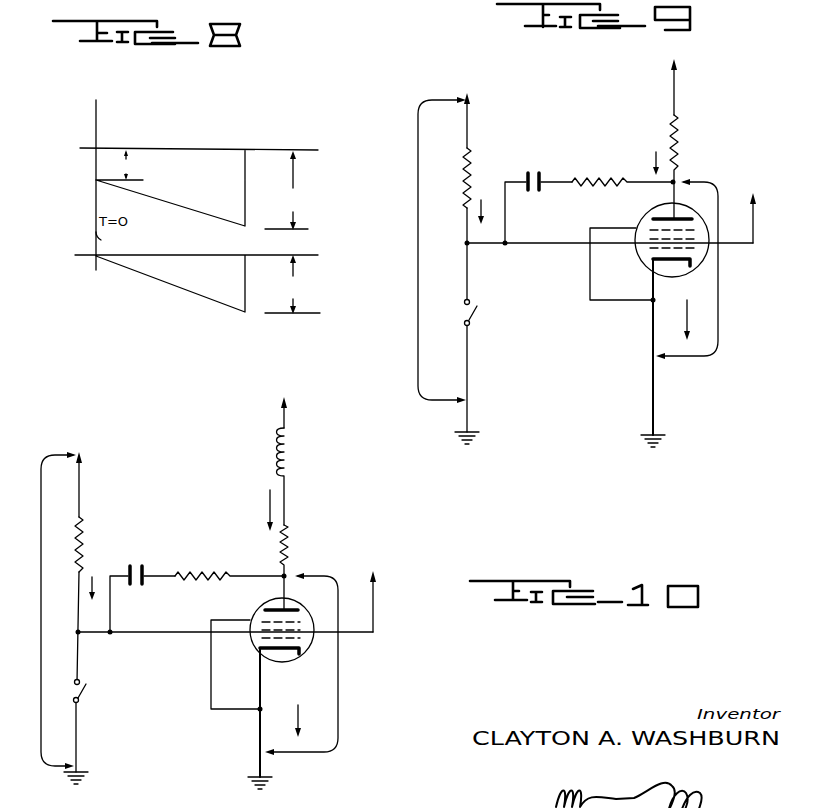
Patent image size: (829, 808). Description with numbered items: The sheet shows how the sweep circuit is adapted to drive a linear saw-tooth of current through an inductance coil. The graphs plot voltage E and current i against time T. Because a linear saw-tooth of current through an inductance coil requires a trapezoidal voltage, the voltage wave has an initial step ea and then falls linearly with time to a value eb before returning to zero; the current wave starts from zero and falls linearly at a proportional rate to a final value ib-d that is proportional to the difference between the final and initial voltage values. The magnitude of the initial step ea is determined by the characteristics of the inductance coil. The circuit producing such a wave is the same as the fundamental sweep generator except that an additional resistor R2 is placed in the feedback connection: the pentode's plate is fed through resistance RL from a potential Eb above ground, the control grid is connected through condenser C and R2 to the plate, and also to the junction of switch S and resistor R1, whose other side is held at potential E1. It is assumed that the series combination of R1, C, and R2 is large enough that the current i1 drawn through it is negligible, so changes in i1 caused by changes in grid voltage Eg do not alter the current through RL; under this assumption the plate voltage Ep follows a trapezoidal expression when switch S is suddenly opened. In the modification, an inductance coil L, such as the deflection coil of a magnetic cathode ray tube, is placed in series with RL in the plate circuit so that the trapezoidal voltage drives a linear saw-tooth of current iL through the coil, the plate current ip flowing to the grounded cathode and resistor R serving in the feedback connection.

In FIG. 8, the time axis T is at (132, 100).
In FIG. 8, the voltage (E) axis / battery voltage E is at (45, 148).
In FIG. 9, the voltage (E) axis / battery voltage E is at (437, 250).
In FIG. 8, the current axis i is at (45, 252).
In FIG. 8, the initial step voltage ea is at (125, 165).
In FIG. 8, the final voltage value eb is at (286, 190).
In FIG. 8, the current ib-d is at (292, 284).
In FIG. 9, the source of potential E1 is at (475, 111).
In FIG. 10, the source of potential E1 is at (66, 607).
In FIG. 9, the resistor R1 is at (474, 172).
In FIG. 10, the resistor R1 is at (90, 544).
In FIG. 9, the current i1 is at (484, 203).
In FIG. 10, the current i1 is at (95, 578).
In FIG. 9, the condenser C is at (538, 196).
In FIG. 10, the condenser C is at (142, 588).
In FIG. 9, the additional resistor R2 is at (622, 170).
In FIG. 10, the resistor R is at (229, 563).
In FIG. 9, the plate load resistance RL is at (684, 167).
In FIG. 10, the plate load resistance RL is at (294, 567).
In FIG. 10, the inductor L is at (291, 476).
In FIG. 9, the load current iL is at (652, 155).
In FIG. 10, the load current iL is at (260, 510).
In FIG. 9, the plate supply potential Eb is at (683, 86).
In FIG. 10, the plate supply potential Eb is at (294, 412).
In FIG. 9, the grid voltage Eg is at (542, 254).
In FIG. 10, the grid voltage Eg is at (150, 652).
In FIG. 9, the plate voltage Ep is at (716, 269).
In FIG. 10, the plate voltage Ep is at (330, 663).
In FIG. 9, the plate current ip is at (692, 320).
In FIG. 10, the plate current ip is at (304, 721).
In FIG. 9, the switch S is at (476, 314).
In FIG. 10, the switch S is at (80, 691).